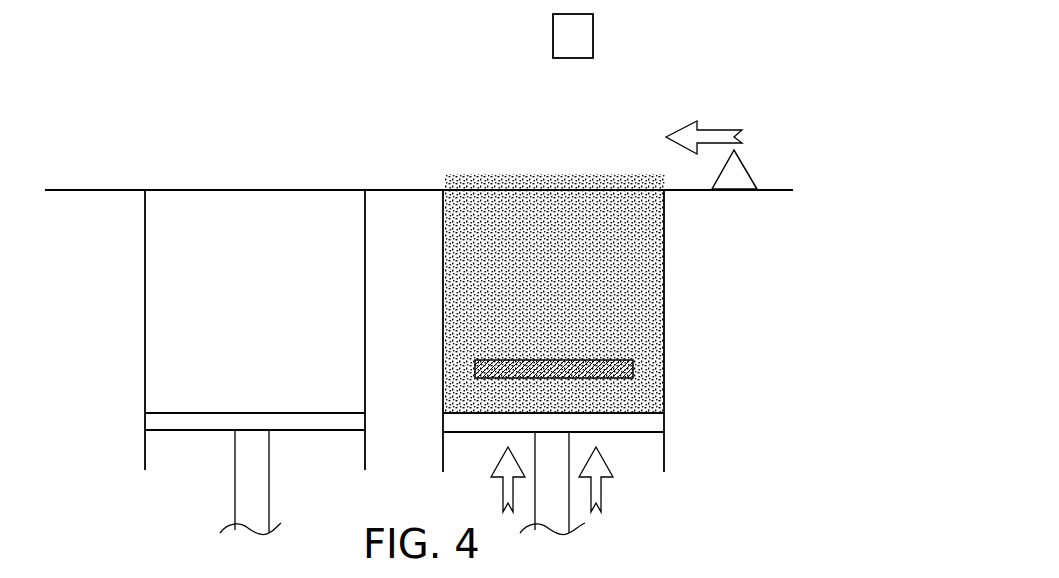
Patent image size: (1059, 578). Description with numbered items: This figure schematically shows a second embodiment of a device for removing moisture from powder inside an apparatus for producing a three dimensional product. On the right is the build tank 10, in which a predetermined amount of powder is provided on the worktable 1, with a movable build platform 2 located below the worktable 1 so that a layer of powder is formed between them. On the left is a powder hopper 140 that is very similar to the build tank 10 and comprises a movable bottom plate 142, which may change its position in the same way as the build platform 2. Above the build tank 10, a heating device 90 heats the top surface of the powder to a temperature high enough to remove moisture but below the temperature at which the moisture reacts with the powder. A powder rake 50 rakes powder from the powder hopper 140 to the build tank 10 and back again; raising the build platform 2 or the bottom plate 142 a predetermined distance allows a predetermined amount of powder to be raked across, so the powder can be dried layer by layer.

The powder hopper 140 is at (145, 283).
The movable bottom plate 142 is at (182, 422).
The build tank 10 is at (664, 370).
The worktable 1 is at (562, 360).
The build platform 2 is at (625, 423).
The heating device 90 is at (580, 32).
The powder rake 50 is at (737, 173).